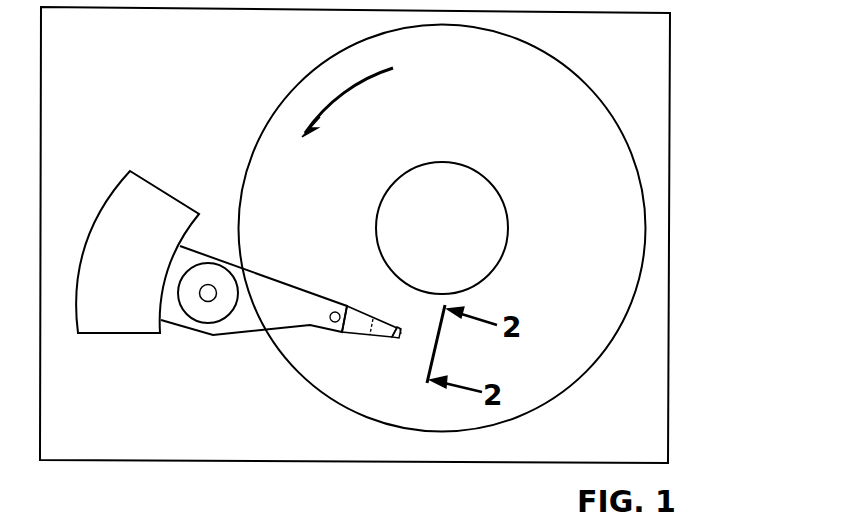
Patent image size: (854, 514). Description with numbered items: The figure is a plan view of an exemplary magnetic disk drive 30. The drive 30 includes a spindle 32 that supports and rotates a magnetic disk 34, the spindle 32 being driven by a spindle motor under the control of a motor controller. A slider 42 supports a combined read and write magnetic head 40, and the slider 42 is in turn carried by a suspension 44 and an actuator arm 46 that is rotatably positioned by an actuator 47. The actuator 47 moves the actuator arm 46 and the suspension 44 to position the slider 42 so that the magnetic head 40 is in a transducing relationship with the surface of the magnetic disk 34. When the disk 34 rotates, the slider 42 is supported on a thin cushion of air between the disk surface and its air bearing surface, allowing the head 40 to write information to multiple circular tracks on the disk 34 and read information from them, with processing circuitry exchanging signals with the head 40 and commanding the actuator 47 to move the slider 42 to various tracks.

The magnetic disk drive 30 is at (692, 47).
The spindle 32 is at (483, 176).
The magnetic disk 34 is at (592, 251).
The magnetic head 40 is at (400, 337).
The slider 42 is at (400, 327).
The suspension 44 is at (360, 335).
The actuator arm 46 is at (267, 270).
The actuator 47 is at (167, 198).